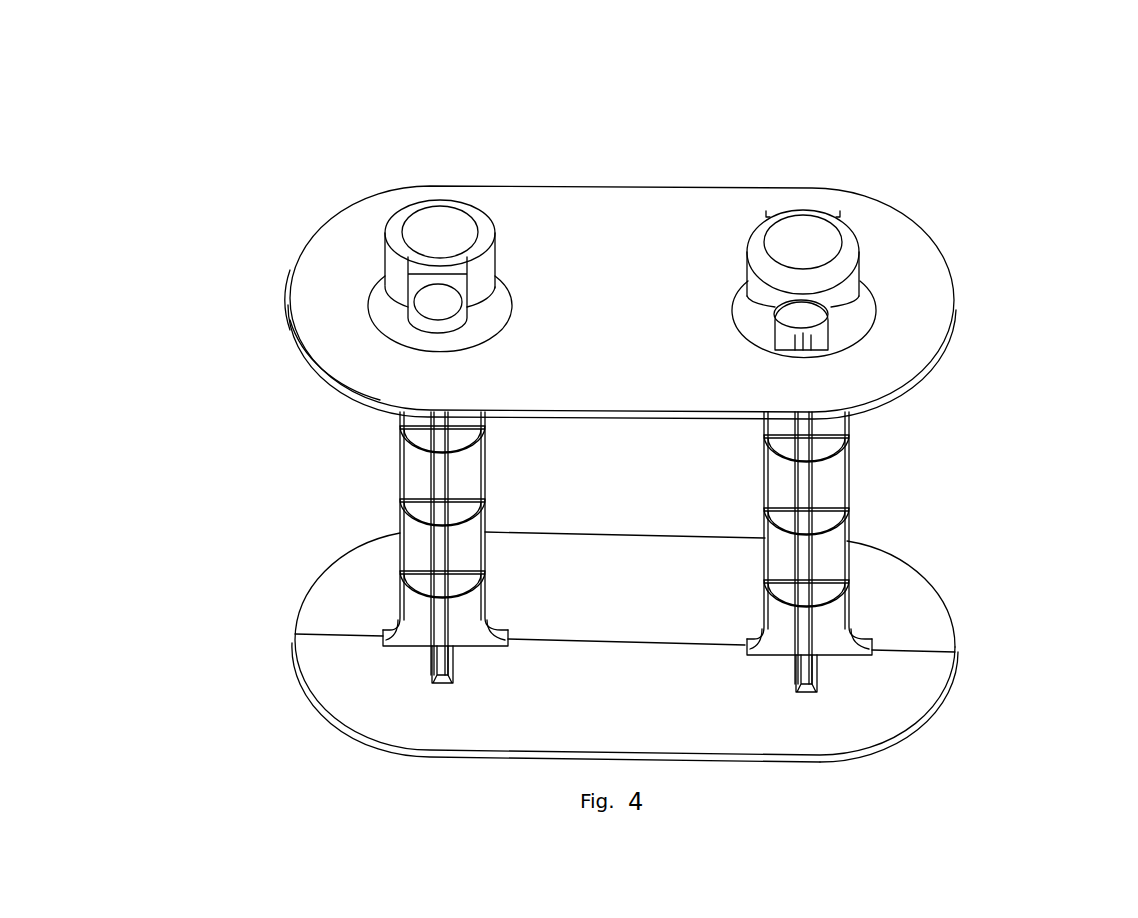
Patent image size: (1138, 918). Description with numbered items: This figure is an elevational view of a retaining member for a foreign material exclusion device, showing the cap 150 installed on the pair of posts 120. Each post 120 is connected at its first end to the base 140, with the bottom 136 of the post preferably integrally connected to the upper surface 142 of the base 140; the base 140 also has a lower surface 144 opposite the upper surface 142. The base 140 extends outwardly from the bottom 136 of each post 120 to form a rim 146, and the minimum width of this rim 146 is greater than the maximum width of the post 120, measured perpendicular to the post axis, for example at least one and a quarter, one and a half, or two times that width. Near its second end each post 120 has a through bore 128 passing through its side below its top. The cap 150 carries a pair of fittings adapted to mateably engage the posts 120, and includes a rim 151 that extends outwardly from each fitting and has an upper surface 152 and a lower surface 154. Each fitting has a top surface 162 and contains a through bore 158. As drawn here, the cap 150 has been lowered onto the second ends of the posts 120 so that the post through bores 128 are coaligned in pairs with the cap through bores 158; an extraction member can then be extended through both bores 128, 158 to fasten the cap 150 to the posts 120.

The post 120 is at (398, 482).
The through bore 128 is at (835, 300).
The bottom 136 is at (870, 638).
The base 140 is at (315, 705).
The upper surface 142 is at (625, 712).
The lower surface 144 is at (382, 747).
The rim 146 is at (955, 681).
The cap 150 is at (611, 184).
The rim 151 is at (288, 305).
The upper surface 152 is at (507, 189).
The lower surface 154 is at (296, 348).
The through bore 158 is at (835, 300).
The top surface 162 is at (805, 237).